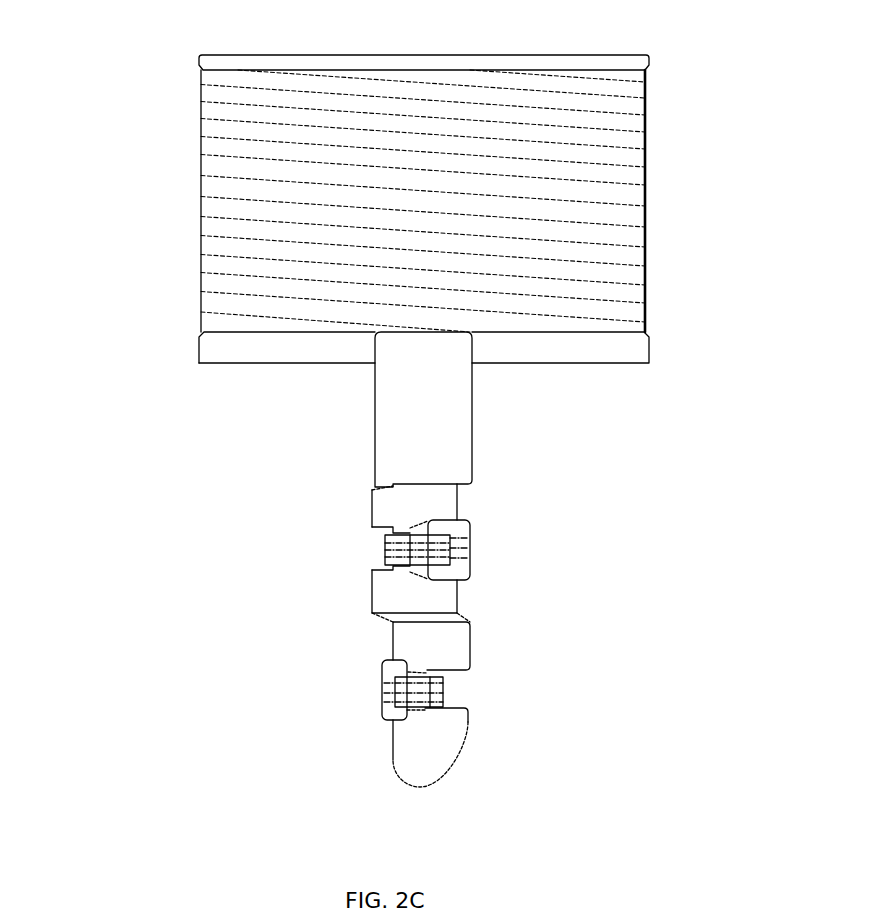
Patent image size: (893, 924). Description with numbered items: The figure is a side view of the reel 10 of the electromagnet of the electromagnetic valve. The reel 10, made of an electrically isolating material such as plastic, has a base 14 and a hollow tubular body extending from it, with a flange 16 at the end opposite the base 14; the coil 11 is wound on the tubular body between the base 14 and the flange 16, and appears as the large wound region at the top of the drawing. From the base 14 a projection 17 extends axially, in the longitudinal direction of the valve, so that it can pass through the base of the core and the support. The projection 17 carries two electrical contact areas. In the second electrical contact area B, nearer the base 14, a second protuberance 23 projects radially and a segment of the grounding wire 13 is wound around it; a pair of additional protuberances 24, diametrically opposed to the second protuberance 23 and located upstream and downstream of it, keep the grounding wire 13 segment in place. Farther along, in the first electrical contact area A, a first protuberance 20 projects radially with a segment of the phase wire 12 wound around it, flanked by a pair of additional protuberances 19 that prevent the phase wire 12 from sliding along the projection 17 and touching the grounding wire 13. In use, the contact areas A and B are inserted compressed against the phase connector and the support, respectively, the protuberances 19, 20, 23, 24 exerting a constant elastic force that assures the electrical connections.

The reel 10 is at (164, 193).
The coil 11 is at (645, 185).
The phase wire 12 is at (422, 688).
The grounding wire 13 is at (385, 562).
The base 14 is at (228, 345).
The flange 16 is at (212, 63).
The projection 17 is at (445, 400).
The additional protuberances 19 is at (470, 647).
The first protuberance 20 is at (390, 707).
The second protuberance 23 is at (465, 532).
The additional protuberances 24 is at (380, 515).
The first electrical contact area A is at (430, 700).
The second electrical contact area B is at (337, 566).